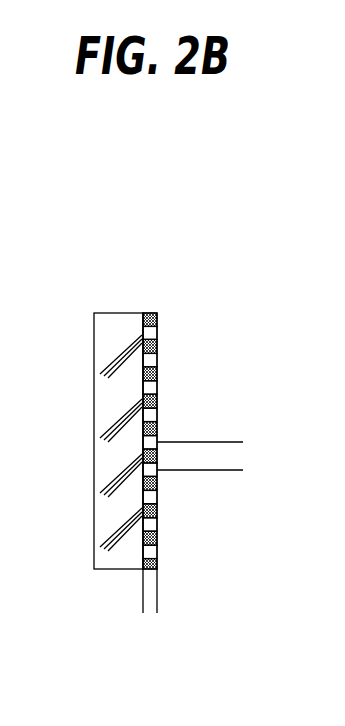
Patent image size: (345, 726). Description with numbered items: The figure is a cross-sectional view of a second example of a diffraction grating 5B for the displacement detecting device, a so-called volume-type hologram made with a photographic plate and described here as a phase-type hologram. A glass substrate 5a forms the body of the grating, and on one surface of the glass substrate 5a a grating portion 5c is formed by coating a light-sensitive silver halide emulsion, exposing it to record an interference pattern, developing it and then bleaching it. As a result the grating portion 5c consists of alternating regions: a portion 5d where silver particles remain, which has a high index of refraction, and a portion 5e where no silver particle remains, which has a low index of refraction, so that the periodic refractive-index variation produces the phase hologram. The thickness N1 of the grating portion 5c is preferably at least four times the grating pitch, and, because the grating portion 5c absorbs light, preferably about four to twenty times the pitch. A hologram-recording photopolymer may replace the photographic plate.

The diffraction grating 5B is at (150, 398).
The glass substrate 5a is at (125, 312).
The grating portion 5c is at (203, 441).
The portion where silver particles remain 5d is at (158, 347).
The portion where no silver particle remains 5e is at (228, 325).
The thickness of the grating portion N1 is at (173, 597).